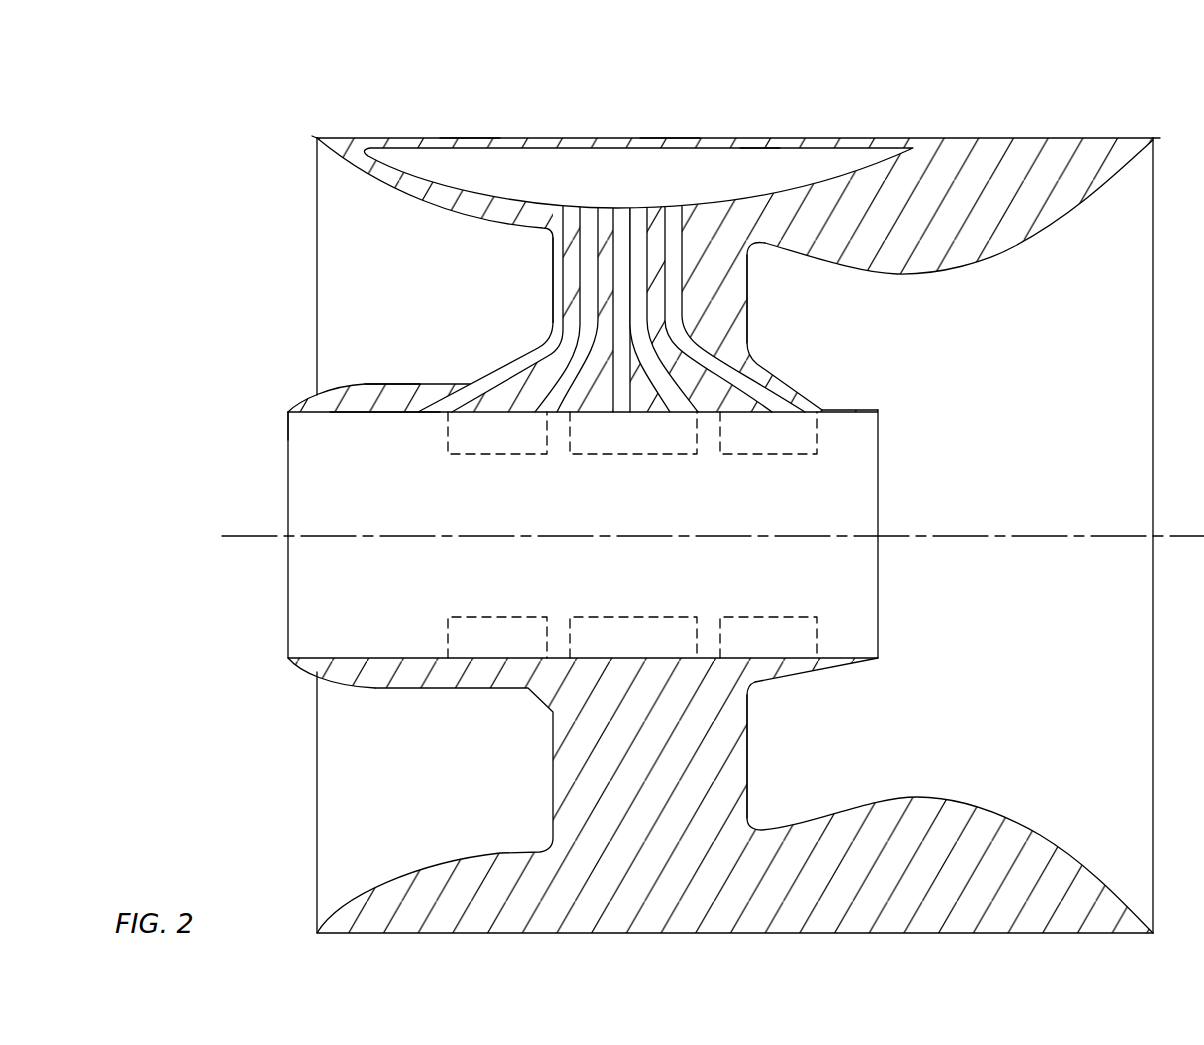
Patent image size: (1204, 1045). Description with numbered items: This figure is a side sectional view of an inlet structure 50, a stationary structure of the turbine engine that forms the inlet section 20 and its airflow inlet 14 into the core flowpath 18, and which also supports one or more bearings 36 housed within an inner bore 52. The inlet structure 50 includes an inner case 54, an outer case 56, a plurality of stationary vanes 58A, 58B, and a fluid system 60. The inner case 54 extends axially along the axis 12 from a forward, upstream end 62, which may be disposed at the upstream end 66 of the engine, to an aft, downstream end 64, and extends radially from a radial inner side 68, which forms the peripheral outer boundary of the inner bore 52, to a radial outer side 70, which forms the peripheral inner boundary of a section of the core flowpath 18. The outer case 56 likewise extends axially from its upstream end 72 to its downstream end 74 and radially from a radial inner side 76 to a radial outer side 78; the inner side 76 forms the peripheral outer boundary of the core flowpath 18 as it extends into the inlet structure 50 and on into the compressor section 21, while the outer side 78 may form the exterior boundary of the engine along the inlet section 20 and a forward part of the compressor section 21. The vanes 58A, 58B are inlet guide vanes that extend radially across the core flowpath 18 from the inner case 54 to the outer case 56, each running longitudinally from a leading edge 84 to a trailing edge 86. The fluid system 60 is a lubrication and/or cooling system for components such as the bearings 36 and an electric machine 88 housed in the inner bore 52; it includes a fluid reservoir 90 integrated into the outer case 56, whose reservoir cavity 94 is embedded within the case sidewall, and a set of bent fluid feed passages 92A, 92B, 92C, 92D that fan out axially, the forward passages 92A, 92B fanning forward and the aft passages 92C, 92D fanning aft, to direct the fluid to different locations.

The axis 12 is at (232, 540).
The airflow inlet 14 is at (317, 223).
The core flowpath 18 is at (378, 276).
The inlet section 20 is at (150, 82).
The inlet structure 50 is at (198, 122).
The compressor section 21 is at (1120, 122).
The bearings 36 is at (487, 456).
The inner bore 52 is at (392, 513).
The inner case 54 is at (385, 422).
The outer case 56 is at (401, 126).
The stationary vane 58A is at (755, 308).
The stationary vane 58B is at (757, 762).
The fluid system 60 is at (762, 155).
The upstream end of the inner case 62 is at (317, 410).
The upstream end of the turbine engine 66 is at (288, 413).
The downstream end of the inner case 64 is at (880, 411).
The radial inner side of the inner case 68 is at (318, 420).
The radial outer side of the inner case 70 is at (393, 382).
The upstream end of the outer case 72 is at (316, 137).
The downstream end of the outer case 74 is at (1156, 138).
The radial inner side of the outer case 76 is at (515, 222).
The radial outer side of the outer case 78 is at (472, 137).
The leading edge 84 is at (553, 290).
The trailing edge 86 is at (747, 278).
The electric machine 88 is at (640, 456).
The fluid reservoir 90 is at (670, 128).
The fluid feed passage 92A is at (470, 383).
The fluid feed passage 92B is at (598, 415).
The fluid feed passage 92C is at (665, 415).
The fluid feed passage 92D is at (798, 380).
The reservoir cavity 94 is at (670, 191).